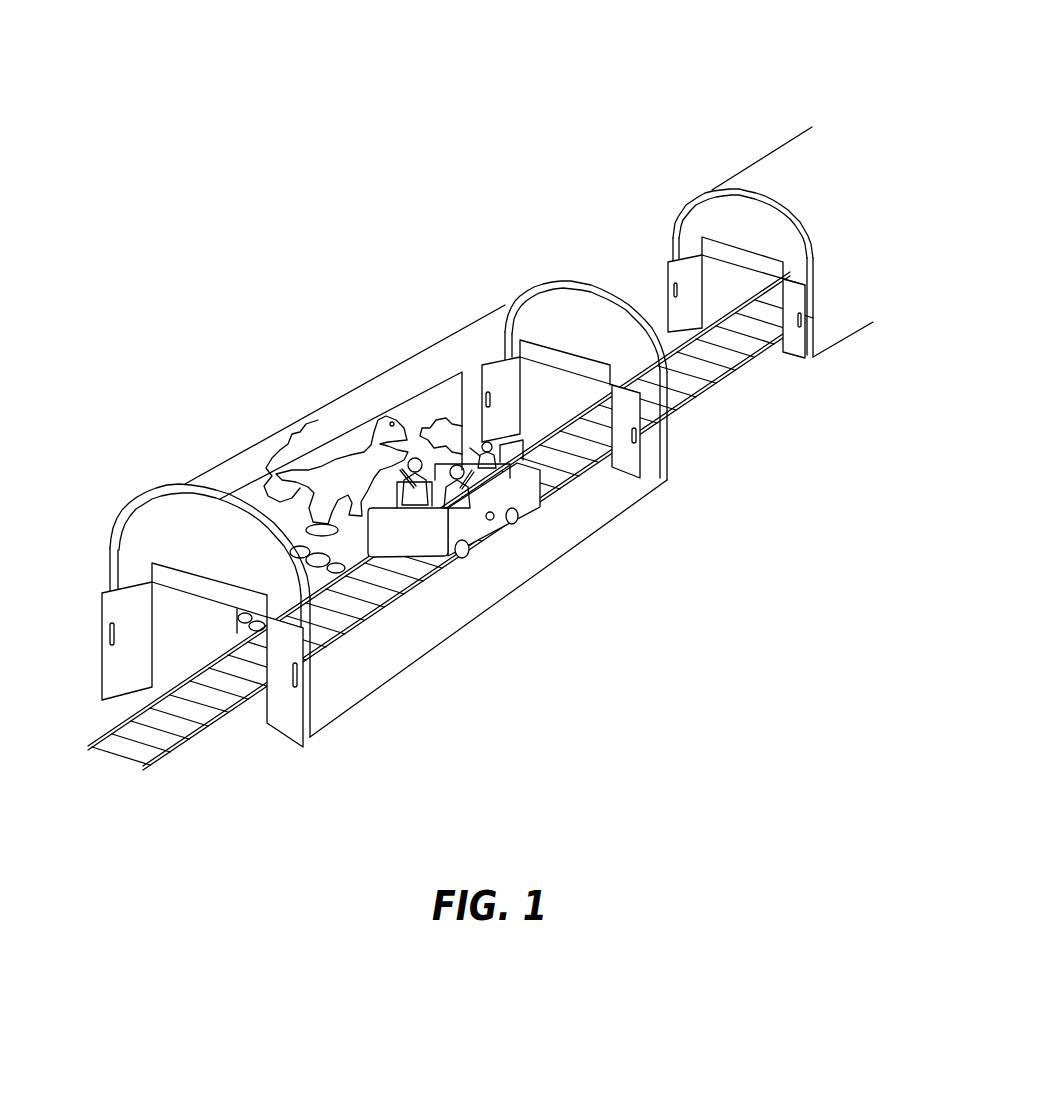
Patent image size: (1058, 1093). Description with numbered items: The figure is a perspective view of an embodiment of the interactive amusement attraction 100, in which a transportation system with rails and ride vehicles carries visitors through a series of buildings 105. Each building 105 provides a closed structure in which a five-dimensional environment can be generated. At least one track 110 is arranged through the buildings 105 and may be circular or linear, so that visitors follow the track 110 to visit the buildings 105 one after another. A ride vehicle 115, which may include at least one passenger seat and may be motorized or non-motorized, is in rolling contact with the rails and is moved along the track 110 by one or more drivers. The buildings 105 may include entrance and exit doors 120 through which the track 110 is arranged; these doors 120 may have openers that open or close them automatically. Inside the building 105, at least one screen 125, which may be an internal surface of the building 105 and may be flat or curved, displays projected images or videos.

The interactive amusement attraction 100 is at (676, 36).
The building 105 is at (715, 163).
The track 110 is at (740, 382).
The ride vehicle 115 is at (442, 544).
The entrance and exit door 120 is at (660, 268).
The screen 125 is at (410, 389).